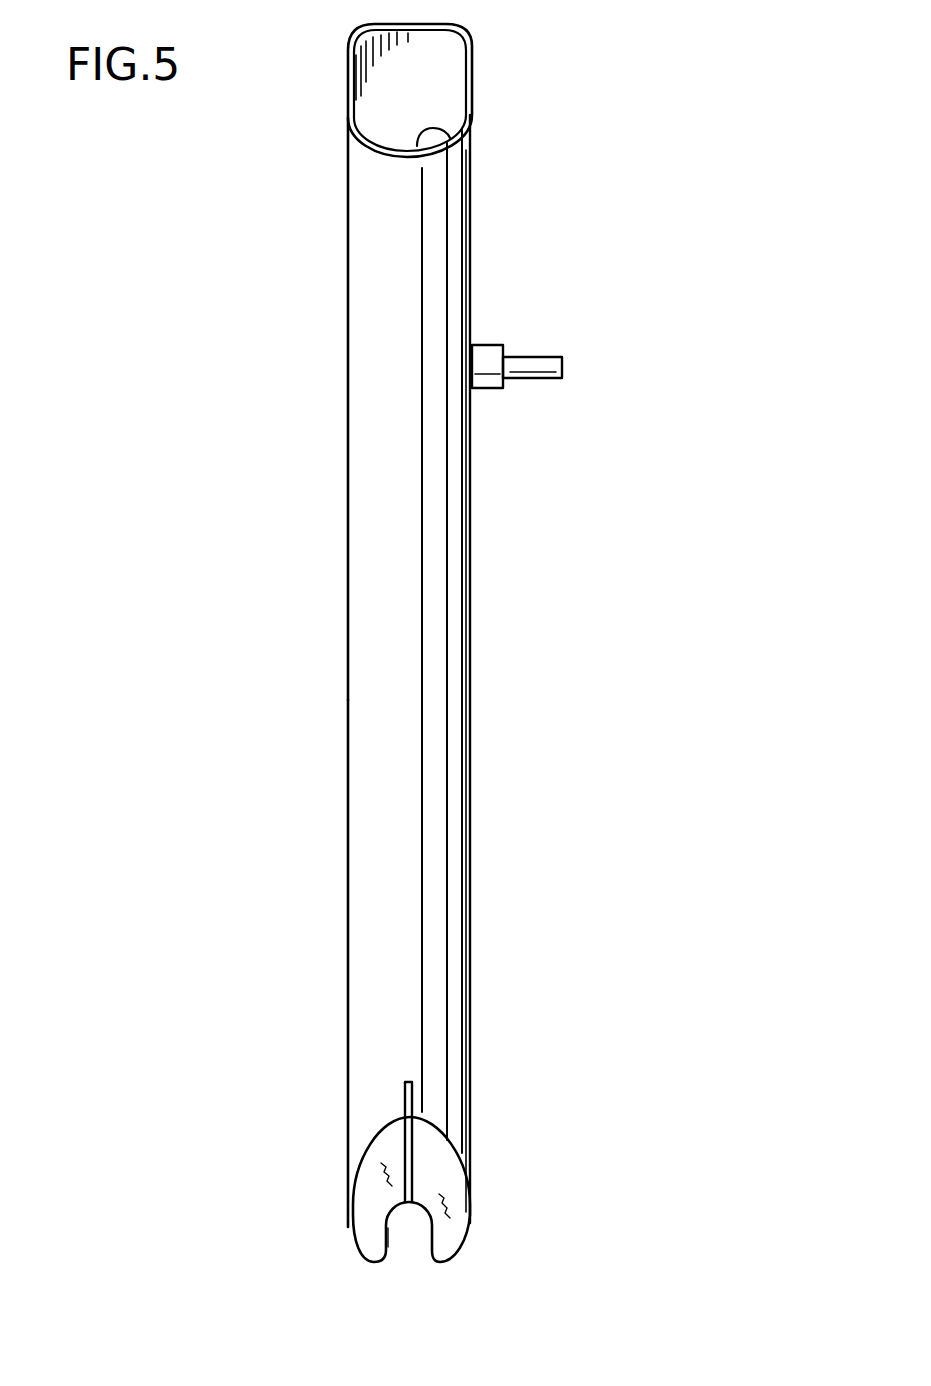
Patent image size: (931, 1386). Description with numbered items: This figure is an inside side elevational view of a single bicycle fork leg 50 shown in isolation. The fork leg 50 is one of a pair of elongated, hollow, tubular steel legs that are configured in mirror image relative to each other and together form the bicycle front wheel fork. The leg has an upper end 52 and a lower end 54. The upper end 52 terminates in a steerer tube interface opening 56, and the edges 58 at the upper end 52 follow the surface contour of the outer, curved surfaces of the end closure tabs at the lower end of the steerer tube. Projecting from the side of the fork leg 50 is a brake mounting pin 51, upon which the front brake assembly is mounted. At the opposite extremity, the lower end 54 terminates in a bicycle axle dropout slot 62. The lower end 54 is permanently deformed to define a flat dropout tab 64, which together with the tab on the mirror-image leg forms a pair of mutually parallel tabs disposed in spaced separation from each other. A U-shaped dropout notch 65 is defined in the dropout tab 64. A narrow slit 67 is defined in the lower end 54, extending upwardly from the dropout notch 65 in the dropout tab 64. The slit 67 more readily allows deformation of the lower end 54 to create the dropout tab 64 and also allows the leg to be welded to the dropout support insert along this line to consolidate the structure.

The tubular fork leg 50 is at (340, 616).
The brake mounting pin 51 is at (522, 377).
The upper end 52 is at (347, 152).
The lower end 54 is at (348, 1143).
The steerer tube interface opening 56 is at (445, 135).
The edge 58 is at (470, 44).
The bicycle axle dropout slot 62 is at (412, 1237).
The dropout tab 64 is at (438, 1173).
The U-shaped dropout notch 65 is at (388, 1237).
The narrow slit 67 is at (410, 1102).